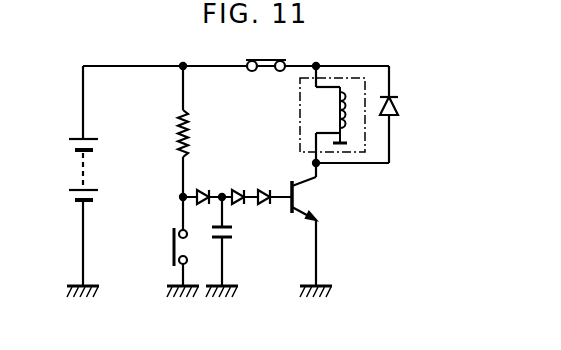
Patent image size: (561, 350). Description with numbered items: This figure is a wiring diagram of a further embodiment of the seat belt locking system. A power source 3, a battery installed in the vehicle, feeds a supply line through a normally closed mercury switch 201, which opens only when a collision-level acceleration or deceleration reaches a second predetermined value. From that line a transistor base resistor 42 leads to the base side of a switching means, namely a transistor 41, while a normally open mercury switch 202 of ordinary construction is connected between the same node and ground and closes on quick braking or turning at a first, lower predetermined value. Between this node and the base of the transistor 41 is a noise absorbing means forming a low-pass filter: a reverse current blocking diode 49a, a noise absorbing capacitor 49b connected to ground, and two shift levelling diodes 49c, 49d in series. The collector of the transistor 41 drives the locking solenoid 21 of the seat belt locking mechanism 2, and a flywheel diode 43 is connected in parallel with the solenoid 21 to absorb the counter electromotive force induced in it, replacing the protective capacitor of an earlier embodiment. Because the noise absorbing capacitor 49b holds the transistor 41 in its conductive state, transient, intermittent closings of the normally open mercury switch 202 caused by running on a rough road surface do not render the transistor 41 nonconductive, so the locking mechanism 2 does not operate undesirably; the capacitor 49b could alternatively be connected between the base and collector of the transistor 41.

The power source 3 is at (78, 172).
The transistor base resistor 42 is at (172, 141).
The normally closed mercury switch 201 is at (285, 59).
The normally open mercury switch 202 is at (170, 253).
The seat belt locking mechanism 2 is at (365, 77).
The locking solenoid 21 is at (349, 108).
The flywheel diode 43 is at (401, 106).
The reverse current blocking diode 49a is at (209, 188).
The noise absorbing capacitor 49b is at (235, 232).
The shift levelling diode 49c is at (236, 190).
The shift levelling diode 49d is at (265, 189).
The transistor 41 is at (302, 195).